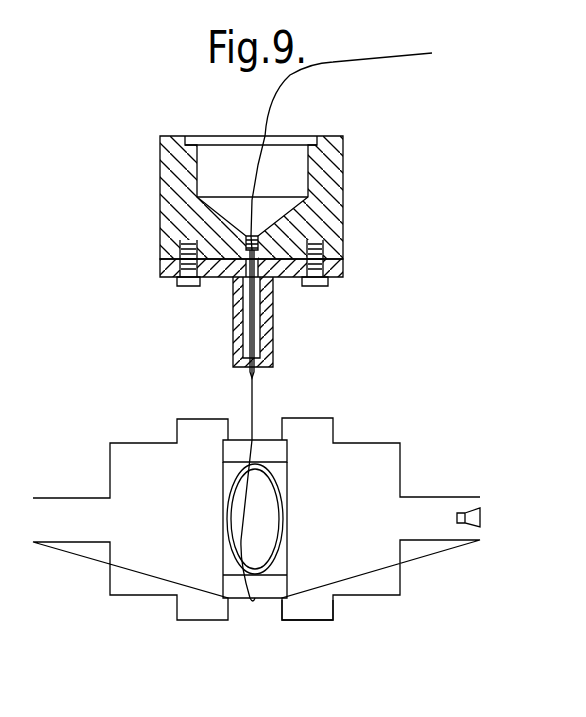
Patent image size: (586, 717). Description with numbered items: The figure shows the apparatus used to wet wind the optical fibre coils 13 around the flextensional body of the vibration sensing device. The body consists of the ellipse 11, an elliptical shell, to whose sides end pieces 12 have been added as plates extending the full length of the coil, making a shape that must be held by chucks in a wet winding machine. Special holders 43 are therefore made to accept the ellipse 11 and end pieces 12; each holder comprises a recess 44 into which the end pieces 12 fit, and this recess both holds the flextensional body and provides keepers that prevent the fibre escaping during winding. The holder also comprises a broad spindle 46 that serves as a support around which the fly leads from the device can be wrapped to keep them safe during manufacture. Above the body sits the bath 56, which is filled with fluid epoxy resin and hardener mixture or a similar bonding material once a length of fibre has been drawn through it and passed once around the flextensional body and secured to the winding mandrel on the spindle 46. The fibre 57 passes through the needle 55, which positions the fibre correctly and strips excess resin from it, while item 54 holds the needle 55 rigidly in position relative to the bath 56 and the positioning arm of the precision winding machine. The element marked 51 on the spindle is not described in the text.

The fibre 57 is at (387, 58).
The bath 56 is at (343, 192).
The needle 55 is at (249, 311).
The needle holder 54 is at (273, 308).
The end pieces 12 is at (270, 445).
The recess 44 is at (224, 441).
The ellipse 11 is at (277, 492).
The coils 13 is at (242, 603).
The broad spindle 46 is at (392, 455).
The holders 43 is at (323, 620).
The outlet fitting 51 is at (483, 508).